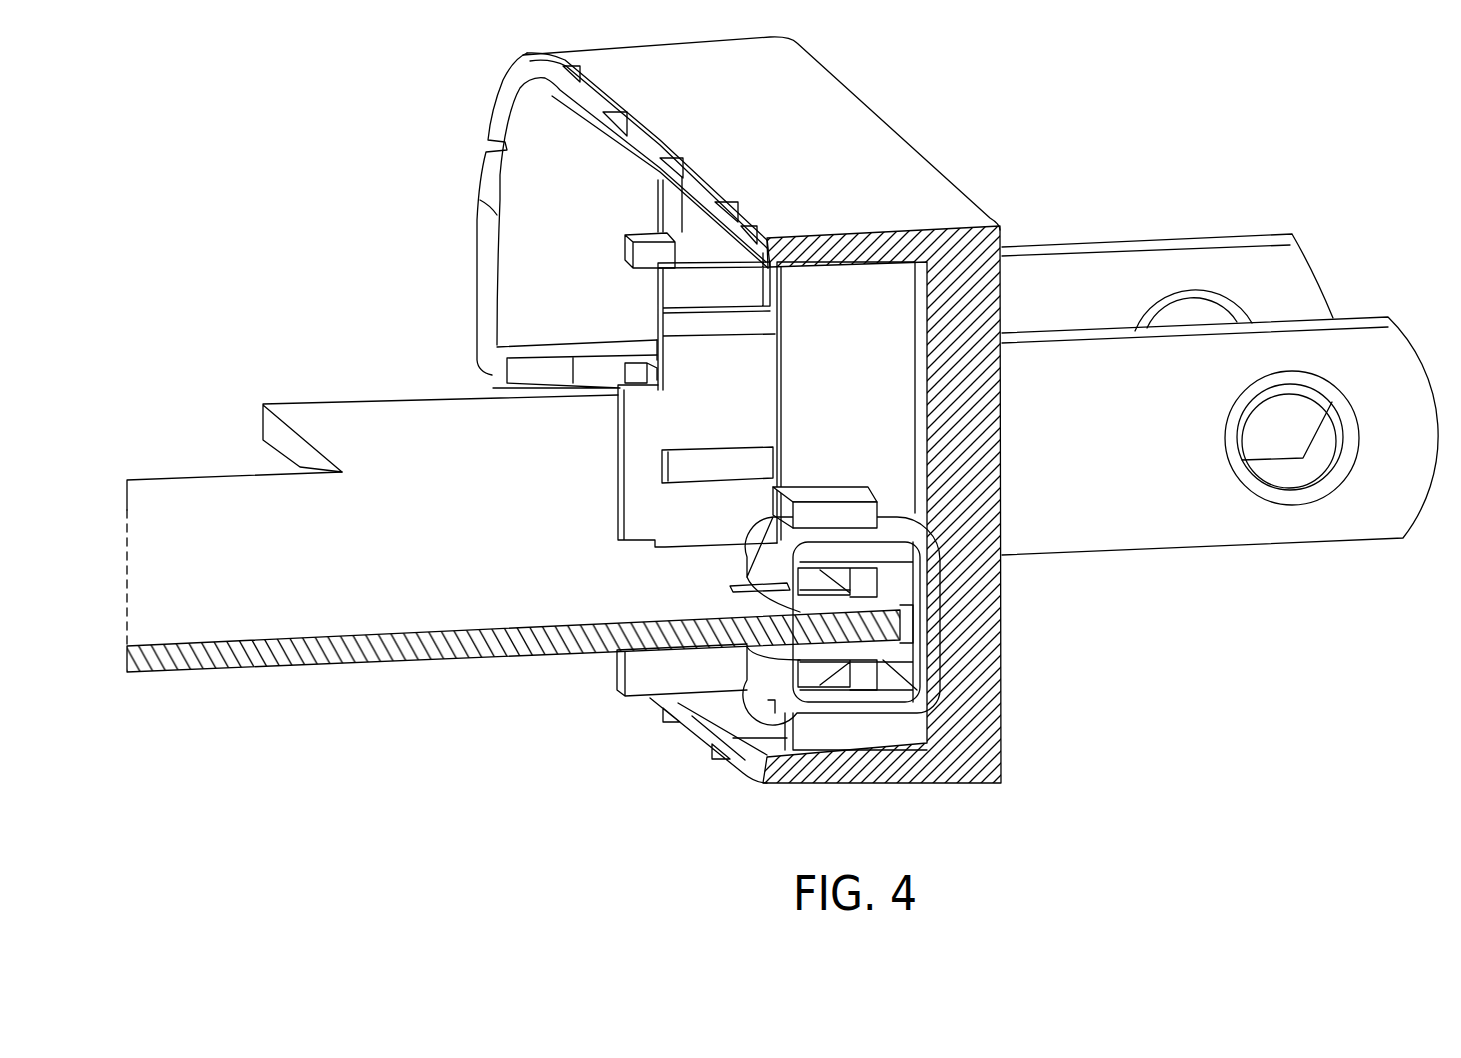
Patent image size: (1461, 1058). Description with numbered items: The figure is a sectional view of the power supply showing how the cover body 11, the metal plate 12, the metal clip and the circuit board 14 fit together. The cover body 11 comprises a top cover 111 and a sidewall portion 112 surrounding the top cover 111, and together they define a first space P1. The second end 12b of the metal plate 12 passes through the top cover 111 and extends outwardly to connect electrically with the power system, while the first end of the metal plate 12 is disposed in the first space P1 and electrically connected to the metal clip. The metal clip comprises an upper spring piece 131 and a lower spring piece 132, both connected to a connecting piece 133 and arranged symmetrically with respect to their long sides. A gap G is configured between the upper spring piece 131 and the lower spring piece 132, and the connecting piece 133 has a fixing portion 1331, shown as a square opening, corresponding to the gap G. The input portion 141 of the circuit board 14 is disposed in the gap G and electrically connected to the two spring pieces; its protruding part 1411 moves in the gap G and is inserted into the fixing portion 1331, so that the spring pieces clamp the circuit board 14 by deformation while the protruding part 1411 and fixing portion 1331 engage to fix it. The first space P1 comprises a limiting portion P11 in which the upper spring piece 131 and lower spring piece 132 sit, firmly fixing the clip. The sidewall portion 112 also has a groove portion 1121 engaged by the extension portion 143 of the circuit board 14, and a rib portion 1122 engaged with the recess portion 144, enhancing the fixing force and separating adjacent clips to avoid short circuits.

The cover body 11 is at (1083, 156).
The top cover 111 is at (1003, 297).
The sidewall portion 112 is at (890, 187).
The groove portion 1121 is at (517, 388).
The rib portion 1122 is at (650, 432).
The metal plate 12 is at (1190, 247).
The second end 12b is at (1298, 290).
The circuit board 14 is at (178, 480).
The input portion 141 is at (900, 627).
The protruding part 1411 is at (897, 600).
The extension portion 143 is at (323, 413).
The recess portion 144 is at (677, 548).
The upper spring piece 131 is at (797, 590).
The lower spring piece 132 is at (710, 697).
The connecting piece 133 is at (927, 672).
The fixing portion 1331 is at (885, 584).
The first space P1 is at (540, 176).
The limiting portion P11 is at (797, 533).
The gap G is at (840, 595).